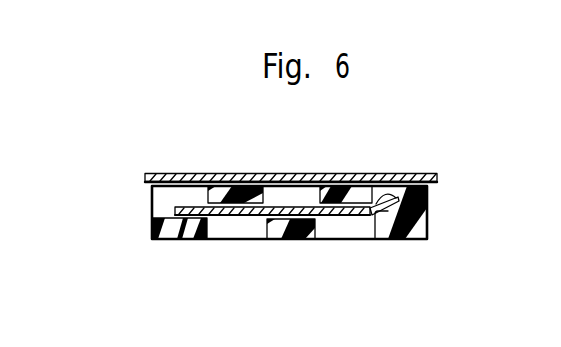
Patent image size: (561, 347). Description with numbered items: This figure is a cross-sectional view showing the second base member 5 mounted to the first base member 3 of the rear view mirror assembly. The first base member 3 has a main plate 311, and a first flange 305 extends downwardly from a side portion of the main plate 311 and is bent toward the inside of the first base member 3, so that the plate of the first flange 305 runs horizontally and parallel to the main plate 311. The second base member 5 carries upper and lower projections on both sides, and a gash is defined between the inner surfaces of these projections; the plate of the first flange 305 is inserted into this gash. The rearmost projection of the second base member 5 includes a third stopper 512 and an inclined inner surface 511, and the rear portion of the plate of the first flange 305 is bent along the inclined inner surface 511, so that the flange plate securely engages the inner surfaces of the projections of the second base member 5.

The first base member 3 is at (407, 172).
The main plate 311 is at (306, 173).
The first flange 305 is at (341, 216).
The second base member 5 is at (426, 222).
The inclined inner surface 511 is at (370, 240).
The third stopper 512 is at (397, 191).